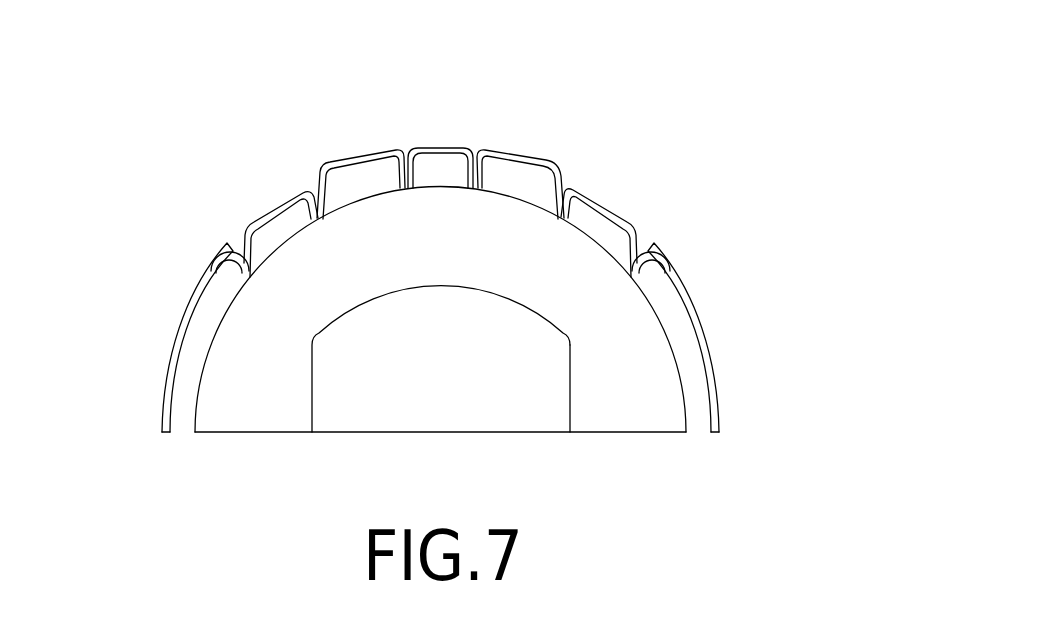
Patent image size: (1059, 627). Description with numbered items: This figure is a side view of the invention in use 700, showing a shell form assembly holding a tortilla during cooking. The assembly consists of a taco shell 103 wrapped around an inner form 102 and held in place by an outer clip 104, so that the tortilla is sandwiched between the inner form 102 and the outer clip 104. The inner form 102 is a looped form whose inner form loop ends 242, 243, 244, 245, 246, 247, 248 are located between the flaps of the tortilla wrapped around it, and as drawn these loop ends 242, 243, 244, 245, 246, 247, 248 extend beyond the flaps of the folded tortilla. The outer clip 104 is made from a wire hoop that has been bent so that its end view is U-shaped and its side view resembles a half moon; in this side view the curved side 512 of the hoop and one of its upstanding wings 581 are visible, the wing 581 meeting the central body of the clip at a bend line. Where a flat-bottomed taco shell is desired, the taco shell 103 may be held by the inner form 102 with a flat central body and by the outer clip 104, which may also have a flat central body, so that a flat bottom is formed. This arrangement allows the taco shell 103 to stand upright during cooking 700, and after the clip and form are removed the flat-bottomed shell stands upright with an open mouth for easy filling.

The invention in use 700 is at (731, 32).
The inner form 102 is at (756, 375).
The taco shell 103 is at (246, 421).
The outer clip 104 is at (291, 423).
The inner form loop end 242 is at (185, 365).
The inner form loop end 243 is at (252, 224).
The inner form loop end 244 is at (337, 177).
The inner form loop end 245 is at (419, 162).
The inner form loop end 246 is at (490, 167).
The inner form loop end 247 is at (578, 206).
The inner form loop end 248 is at (658, 285).
The curved side 512 is at (426, 287).
The wing 581 is at (570, 386).